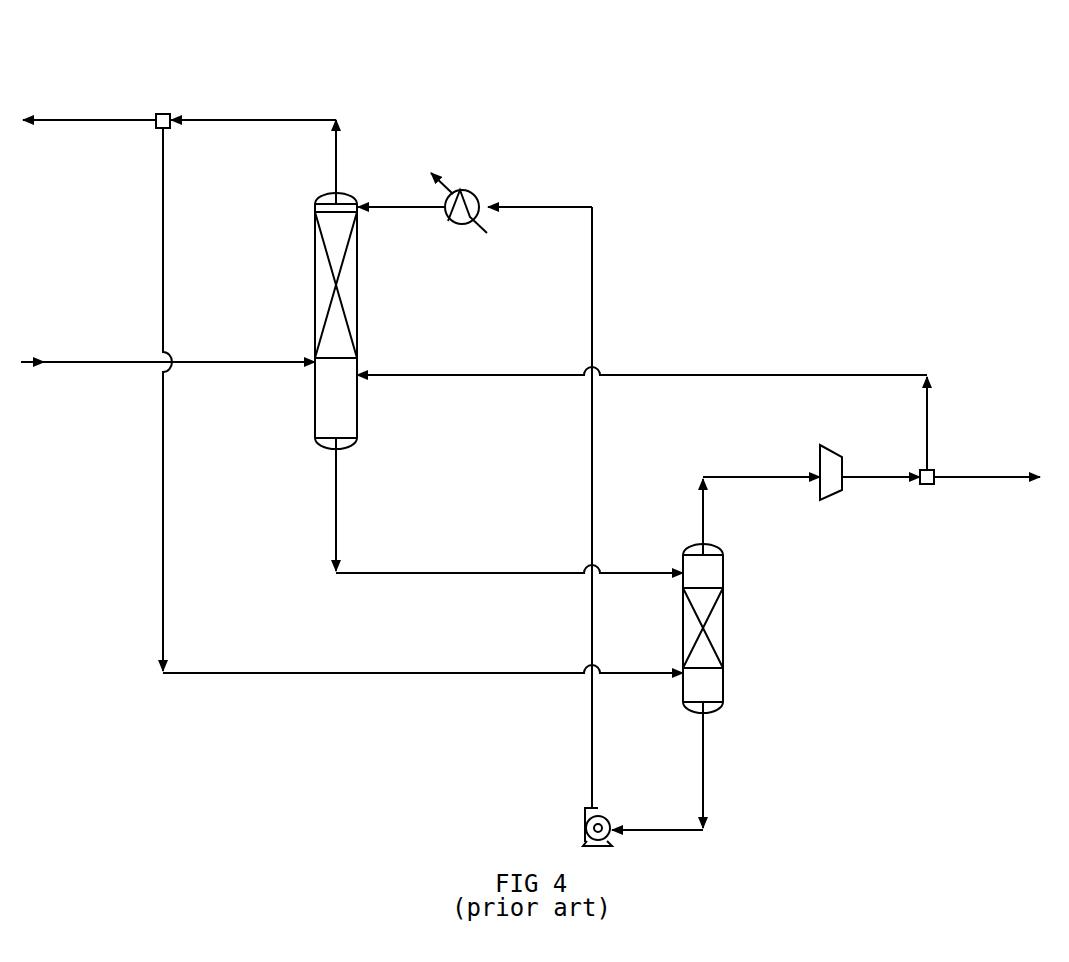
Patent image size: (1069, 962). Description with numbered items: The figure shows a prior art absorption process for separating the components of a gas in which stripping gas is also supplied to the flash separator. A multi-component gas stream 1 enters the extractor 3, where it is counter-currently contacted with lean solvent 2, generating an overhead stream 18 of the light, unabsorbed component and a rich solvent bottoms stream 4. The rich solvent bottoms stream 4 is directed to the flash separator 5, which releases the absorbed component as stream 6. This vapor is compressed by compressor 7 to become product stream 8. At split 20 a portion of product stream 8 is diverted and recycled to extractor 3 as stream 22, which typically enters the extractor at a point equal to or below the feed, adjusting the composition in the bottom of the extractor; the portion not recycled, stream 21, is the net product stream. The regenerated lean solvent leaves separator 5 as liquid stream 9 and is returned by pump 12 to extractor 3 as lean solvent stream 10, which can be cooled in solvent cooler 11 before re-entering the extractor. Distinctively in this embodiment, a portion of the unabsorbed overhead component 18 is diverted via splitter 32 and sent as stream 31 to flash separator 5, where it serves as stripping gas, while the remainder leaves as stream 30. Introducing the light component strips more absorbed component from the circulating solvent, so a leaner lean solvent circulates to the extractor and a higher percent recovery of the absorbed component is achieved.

The multi-component gas stream 1 is at (119, 362).
The lean solvent 2 is at (380, 205).
The extractor 3 is at (315, 268).
The rich solvent bottoms stream 4 is at (370, 574).
The flash separator 5 is at (723, 678).
The released absorbed component stream 6 is at (763, 475).
The compressor 7 is at (832, 450).
The product stream 8 is at (867, 478).
The liquid stream 9 is at (660, 831).
The lean solvent stream 10 is at (592, 317).
The solvent cooler 11 is at (465, 223).
The pump 12 is at (585, 832).
The overhead stream 18 is at (233, 120).
The split 20 is at (933, 484).
The net product stream 21 is at (985, 475).
The recycle stream 22 is at (713, 375).
The product stream 30 is at (123, 120).
The stripping gas stream 31 is at (163, 217).
The splitter 32 is at (170, 128).